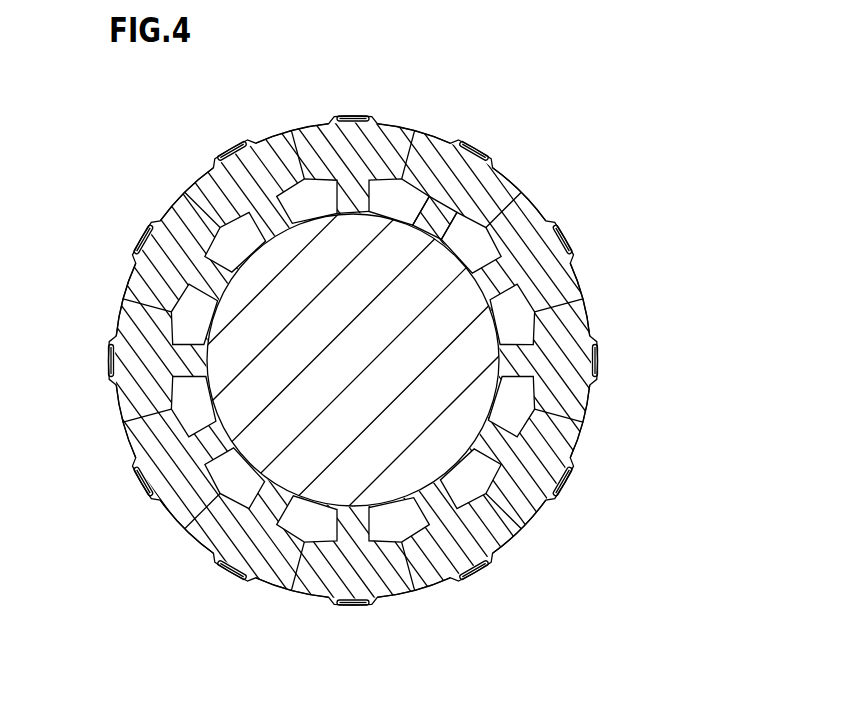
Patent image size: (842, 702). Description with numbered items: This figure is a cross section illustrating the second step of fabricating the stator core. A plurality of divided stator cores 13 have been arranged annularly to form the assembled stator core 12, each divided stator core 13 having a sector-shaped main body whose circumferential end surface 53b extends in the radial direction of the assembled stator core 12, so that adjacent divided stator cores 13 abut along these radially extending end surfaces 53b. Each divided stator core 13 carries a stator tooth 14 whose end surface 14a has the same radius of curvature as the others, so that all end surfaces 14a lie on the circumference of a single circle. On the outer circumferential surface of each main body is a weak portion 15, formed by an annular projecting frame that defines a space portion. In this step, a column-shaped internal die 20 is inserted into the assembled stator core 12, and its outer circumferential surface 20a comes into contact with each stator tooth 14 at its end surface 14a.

The assembled stator core 12 is at (368, 108).
The divided stator core 13 is at (497, 192).
The stator tooth 14 is at (431, 222).
The end surface 14a is at (352, 212).
The weak portion 15 is at (473, 148).
The internal die 20 is at (498, 500).
The outer circumferential surface 20a is at (588, 416).
The end surface 53b is at (507, 210).